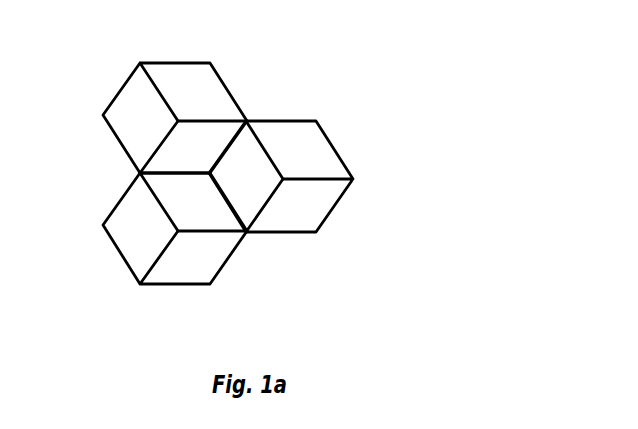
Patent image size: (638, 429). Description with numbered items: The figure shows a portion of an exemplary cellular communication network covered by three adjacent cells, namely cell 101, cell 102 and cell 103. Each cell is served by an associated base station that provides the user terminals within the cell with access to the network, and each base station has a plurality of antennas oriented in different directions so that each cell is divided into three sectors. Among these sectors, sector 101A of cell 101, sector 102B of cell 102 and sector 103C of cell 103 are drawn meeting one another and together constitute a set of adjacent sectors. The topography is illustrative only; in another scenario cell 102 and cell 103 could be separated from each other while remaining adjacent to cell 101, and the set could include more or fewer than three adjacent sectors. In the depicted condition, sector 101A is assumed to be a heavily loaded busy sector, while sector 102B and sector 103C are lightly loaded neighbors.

The cell 101 is at (200, 107).
The sector 101A is at (193, 147).
The cell 102 is at (296, 167).
The sector 102B is at (246, 176).
The cell 103 is at (181, 250).
The sector 103C is at (193, 202).